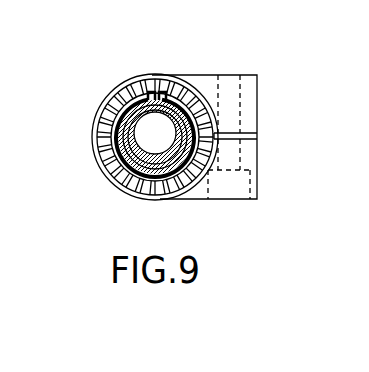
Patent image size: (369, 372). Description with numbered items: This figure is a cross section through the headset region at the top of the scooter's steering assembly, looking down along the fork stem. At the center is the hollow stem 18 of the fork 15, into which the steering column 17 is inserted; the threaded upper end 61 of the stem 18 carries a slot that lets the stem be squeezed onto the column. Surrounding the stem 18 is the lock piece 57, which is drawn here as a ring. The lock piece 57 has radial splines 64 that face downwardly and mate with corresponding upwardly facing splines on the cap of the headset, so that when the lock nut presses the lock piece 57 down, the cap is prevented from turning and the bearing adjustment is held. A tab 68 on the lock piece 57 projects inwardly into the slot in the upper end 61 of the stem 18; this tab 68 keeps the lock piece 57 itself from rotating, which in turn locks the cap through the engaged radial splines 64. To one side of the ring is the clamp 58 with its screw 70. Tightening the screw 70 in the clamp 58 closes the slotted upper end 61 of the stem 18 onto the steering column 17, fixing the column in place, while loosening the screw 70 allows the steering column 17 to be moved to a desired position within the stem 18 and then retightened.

The fork 15 is at (100, 107).
The steering column 17 is at (168, 199).
The stem 18 is at (107, 105).
The lock piece 57 is at (108, 146).
The clamp 58 is at (170, 92).
The upper end 61 is at (112, 173).
The radial splines 64 is at (166, 76).
The tab 68 is at (168, 96).
The screw 70 is at (238, 199).